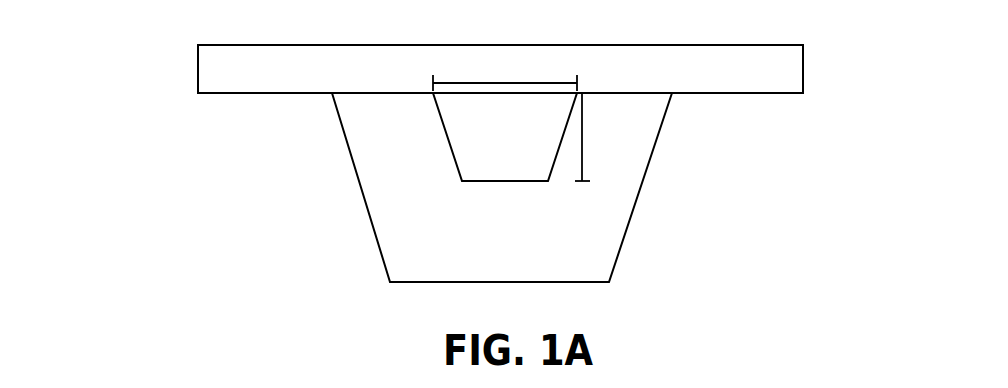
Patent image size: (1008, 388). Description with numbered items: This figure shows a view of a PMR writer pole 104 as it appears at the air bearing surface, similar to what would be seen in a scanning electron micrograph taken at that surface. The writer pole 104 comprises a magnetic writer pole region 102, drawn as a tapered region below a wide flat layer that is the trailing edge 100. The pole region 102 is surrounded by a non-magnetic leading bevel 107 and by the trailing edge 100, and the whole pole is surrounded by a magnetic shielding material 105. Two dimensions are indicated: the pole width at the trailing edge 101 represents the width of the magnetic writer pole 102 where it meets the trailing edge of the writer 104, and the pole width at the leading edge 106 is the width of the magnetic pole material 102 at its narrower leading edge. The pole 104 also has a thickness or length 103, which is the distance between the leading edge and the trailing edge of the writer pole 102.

The trailing edge 100 is at (238, 78).
The pole width at the trailing edge 101 is at (513, 82).
The magnetic writer pole region 102 is at (533, 147).
The thickness or length 103 is at (582, 140).
The PMR writer pole 104 is at (124, 120).
The magnetic shielding material 105 is at (297, 199).
The pole width at the leading edge 106 is at (482, 190).
The non-magnetic leading bevel 107 is at (576, 238).